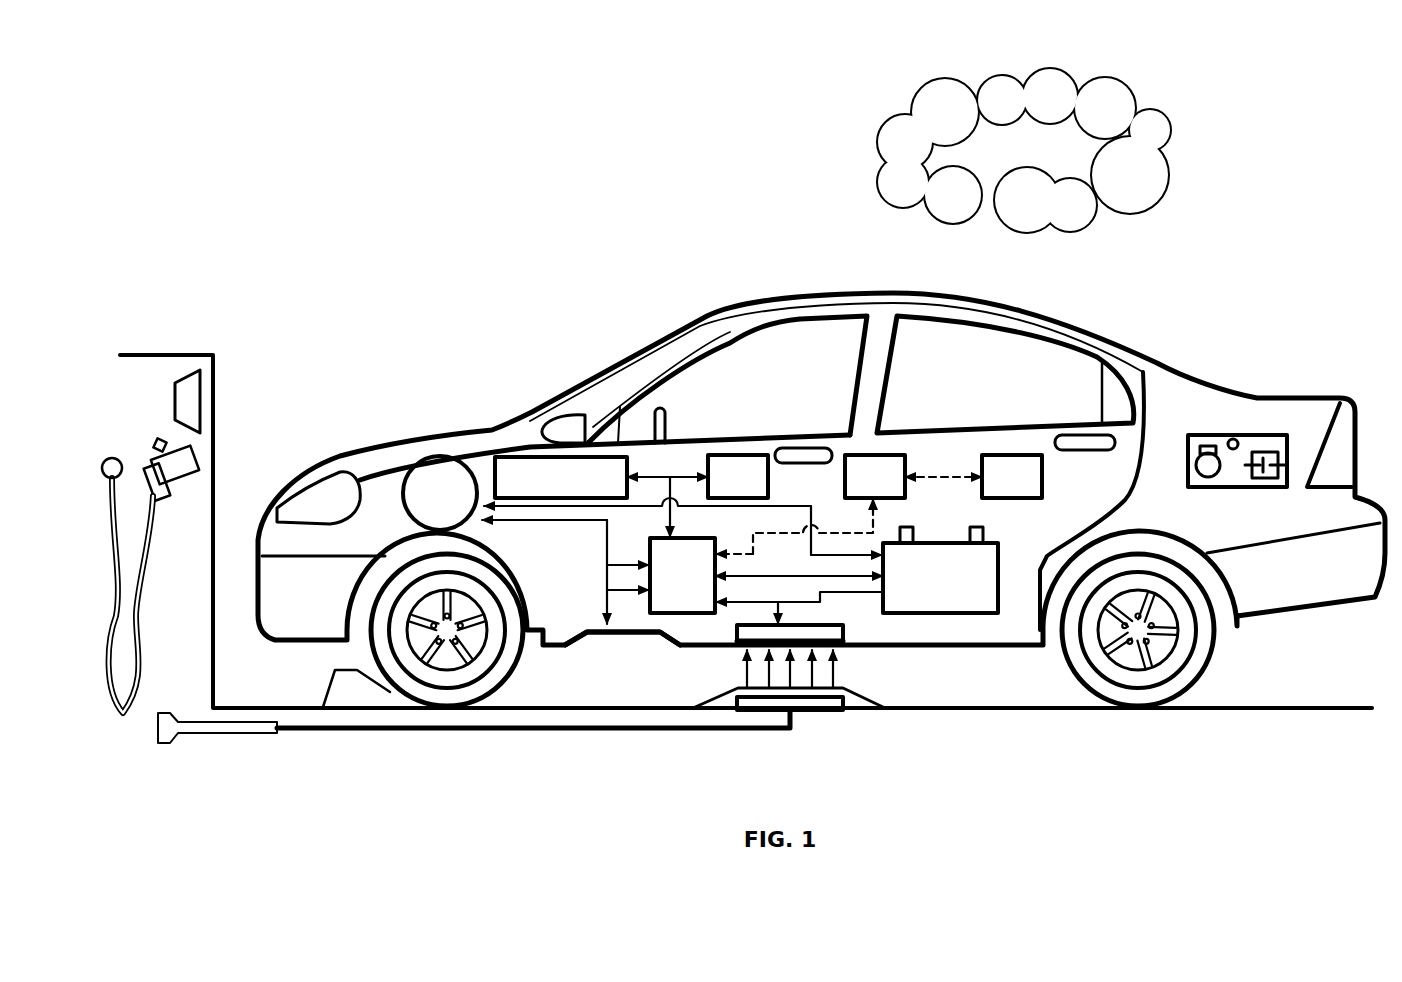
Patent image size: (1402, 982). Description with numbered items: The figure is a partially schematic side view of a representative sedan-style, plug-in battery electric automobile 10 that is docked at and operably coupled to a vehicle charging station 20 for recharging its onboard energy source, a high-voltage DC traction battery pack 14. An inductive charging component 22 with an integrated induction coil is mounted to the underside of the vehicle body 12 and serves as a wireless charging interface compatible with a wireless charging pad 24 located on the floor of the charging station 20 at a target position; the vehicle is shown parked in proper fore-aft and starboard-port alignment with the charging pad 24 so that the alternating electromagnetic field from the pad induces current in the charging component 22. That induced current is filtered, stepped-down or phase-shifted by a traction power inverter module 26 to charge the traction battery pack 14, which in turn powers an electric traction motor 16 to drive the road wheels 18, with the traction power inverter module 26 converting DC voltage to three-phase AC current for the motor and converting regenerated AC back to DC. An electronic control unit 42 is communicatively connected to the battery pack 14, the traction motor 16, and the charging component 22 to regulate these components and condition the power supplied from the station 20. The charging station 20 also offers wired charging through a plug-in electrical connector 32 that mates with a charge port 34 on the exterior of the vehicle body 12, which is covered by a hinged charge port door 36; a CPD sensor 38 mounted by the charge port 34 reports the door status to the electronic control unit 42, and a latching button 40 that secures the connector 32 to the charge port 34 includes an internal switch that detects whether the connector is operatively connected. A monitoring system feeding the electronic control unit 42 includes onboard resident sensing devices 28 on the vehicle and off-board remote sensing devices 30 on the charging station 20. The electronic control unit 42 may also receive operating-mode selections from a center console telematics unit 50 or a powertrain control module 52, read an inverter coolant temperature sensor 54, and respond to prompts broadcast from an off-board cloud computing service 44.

The automobile 10 is at (424, 236).
The vehicle body 12 is at (651, 268).
The traction battery pack 14 is at (962, 616).
The electric traction motor 16 is at (425, 462).
The road wheel 18 is at (450, 710).
The vehicle charging station 20 is at (245, 334).
The inductive charging component 22 is at (737, 630).
The wireless charging pad 24 is at (815, 711).
The traction power inverter module 26 is at (670, 589).
The resident sensing device 28 is at (600, 648).
The remote sensing device 30 is at (190, 380).
The electrical connector 32 is at (150, 462).
The charge port 34 is at (1200, 443).
The charge port door 36 is at (1268, 440).
The CPD sensor 38 is at (1222, 440).
The latching button 40 is at (158, 440).
The electronic control unit 42 is at (492, 478).
The cloud computing service 44 is at (1008, 162).
The center console telematics unit 50 is at (720, 453).
The powertrain control module 52 is at (878, 453).
The coolant temperature sensor 54 is at (1008, 453).